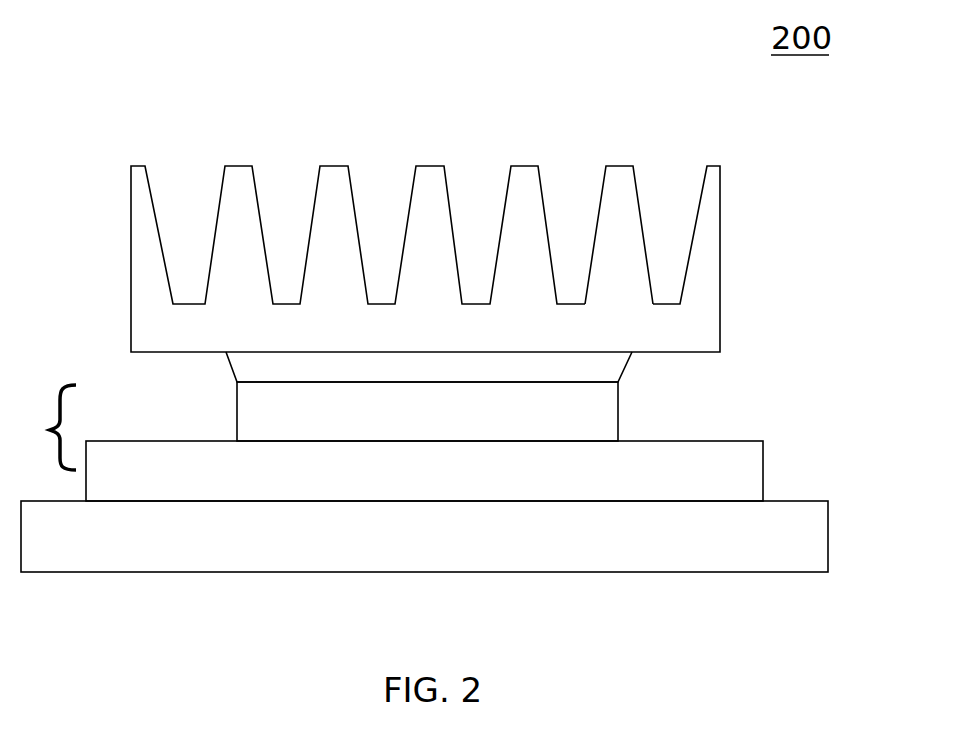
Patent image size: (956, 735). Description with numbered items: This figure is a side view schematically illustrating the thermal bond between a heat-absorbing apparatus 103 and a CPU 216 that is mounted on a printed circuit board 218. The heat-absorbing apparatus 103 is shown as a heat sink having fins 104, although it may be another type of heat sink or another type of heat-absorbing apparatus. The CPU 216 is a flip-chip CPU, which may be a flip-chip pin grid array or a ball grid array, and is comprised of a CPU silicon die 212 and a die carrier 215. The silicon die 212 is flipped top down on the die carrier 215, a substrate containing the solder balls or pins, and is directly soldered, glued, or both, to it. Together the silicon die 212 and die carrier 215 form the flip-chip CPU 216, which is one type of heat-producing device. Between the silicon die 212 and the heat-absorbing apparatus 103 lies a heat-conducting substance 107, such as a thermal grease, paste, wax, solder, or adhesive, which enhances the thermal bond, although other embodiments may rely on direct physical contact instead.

The heat-absorbing apparatus 103 is at (721, 312).
The fins 104 is at (621, 187).
The heat-conducting substance 107 is at (631, 363).
The CPU silicon die 212 is at (619, 410).
The die carrier 215 is at (764, 470).
The CPU 216 is at (44, 427).
The printed circuit board 218 is at (829, 536).